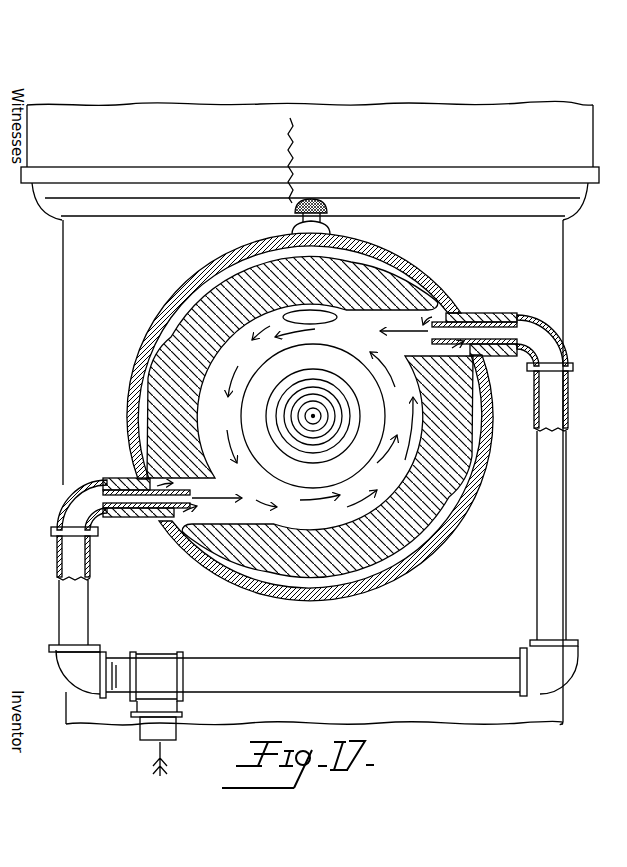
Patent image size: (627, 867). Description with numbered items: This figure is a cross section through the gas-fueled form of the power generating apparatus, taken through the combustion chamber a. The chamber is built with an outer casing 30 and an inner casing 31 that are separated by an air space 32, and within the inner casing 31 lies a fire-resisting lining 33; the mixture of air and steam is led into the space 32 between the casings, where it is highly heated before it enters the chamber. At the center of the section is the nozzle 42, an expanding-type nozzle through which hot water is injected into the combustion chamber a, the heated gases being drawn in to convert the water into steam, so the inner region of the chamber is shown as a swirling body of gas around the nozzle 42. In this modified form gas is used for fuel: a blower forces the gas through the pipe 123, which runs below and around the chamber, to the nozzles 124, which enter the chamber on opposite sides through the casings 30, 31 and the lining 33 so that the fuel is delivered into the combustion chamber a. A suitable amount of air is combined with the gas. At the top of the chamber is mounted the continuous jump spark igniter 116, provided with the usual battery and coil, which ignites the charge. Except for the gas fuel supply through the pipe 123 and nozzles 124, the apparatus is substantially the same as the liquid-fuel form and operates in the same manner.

The outer casing 30 is at (390, 587).
The inner casing 31 is at (233, 558).
The air space 32 is at (313, 583).
The fire-resisting lining 33 is at (157, 420).
The nozzle 42 is at (314, 414).
The jump spark igniter 116 is at (292, 228).
The pipe 123 is at (398, 690).
The nozzles 124 is at (447, 322).
The combustion chamber a is at (310, 415).